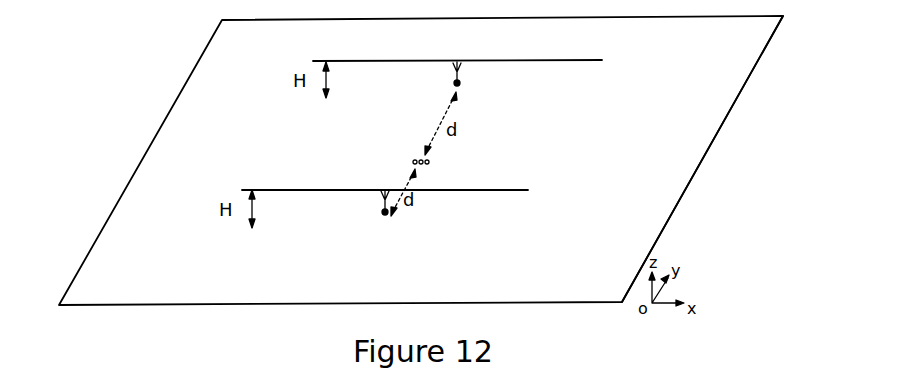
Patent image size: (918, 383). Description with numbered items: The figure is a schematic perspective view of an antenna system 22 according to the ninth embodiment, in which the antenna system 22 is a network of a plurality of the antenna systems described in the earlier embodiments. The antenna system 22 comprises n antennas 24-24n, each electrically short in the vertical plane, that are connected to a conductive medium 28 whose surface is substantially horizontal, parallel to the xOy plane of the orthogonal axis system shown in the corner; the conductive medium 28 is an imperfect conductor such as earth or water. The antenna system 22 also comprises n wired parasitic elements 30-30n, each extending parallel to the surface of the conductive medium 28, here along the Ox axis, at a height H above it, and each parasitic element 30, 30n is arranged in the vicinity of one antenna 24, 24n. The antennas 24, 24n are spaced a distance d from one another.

The antenna system 22 is at (141, 97).
The antenna 24 is at (459, 86).
The n-th antenna 24n is at (383, 215).
The conductive medium 28 is at (678, 174).
The wired parasitic element 30 is at (590, 60).
The n-th parasitic element 30n is at (513, 190).